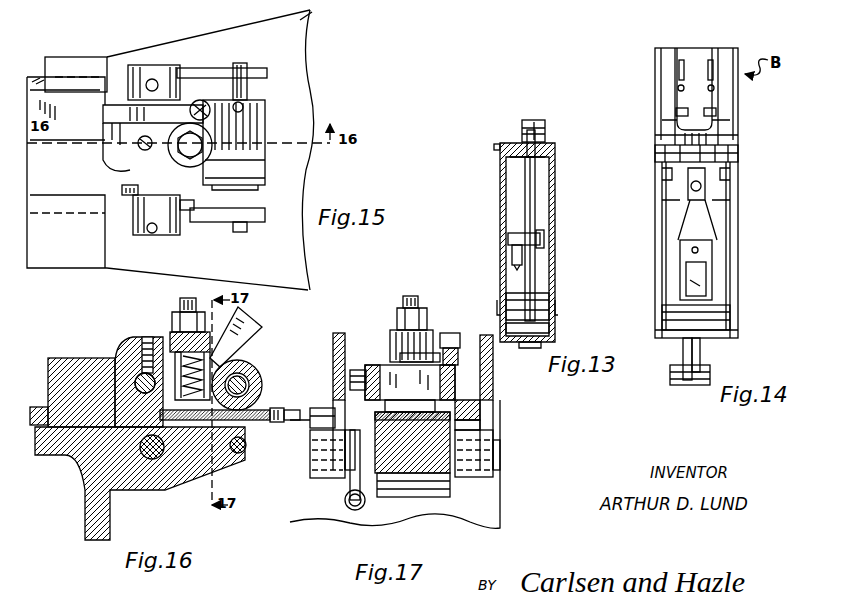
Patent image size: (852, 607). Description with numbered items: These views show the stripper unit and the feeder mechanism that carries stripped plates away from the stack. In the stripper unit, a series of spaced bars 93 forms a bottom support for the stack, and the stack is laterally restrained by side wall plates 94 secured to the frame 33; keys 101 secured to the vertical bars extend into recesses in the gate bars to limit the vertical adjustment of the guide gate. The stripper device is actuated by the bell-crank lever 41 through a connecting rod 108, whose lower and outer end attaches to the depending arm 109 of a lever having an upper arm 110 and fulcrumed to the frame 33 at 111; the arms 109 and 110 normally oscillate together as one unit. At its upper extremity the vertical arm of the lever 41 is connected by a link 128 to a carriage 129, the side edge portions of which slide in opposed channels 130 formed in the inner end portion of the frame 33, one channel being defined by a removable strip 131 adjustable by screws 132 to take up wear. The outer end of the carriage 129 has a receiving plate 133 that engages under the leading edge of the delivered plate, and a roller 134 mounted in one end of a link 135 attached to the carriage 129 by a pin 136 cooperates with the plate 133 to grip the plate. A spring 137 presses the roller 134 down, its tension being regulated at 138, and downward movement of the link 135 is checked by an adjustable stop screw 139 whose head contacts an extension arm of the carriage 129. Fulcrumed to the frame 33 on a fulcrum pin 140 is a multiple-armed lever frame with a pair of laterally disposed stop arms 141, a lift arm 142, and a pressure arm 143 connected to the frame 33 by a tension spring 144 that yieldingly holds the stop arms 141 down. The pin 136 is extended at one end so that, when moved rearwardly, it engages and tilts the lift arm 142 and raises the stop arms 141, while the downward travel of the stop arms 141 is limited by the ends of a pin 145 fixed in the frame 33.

In FIG. 15, the frame 33 is at (298, 30).
In FIG. 14, the frame 33 is at (735, 235).
In FIG. 16, the frame 33 is at (88, 502).
In FIG. 17, the frame 33 is at (492, 501).
In FIG. 13, the bell-crank lever 41 is at (533, 282).
In FIG. 14, the spaced bars 93 is at (740, 155).
In FIG. 14, the side wall plates 94 is at (657, 58).
In FIG. 14, the keys 101 is at (712, 60).
In FIG. 13, the connecting rod 108 is at (514, 262).
In FIG. 14, the connecting rod 108 is at (682, 359).
In FIG. 14, the depending arm 109 is at (705, 357).
In FIG. 14, the upper arm 110 is at (715, 276).
In FIG. 14, the fulcrum 111 is at (735, 327).
In FIG. 13, the link 128 is at (546, 125).
In FIG. 15, the carriage 129 is at (36, 100).
In FIG. 13, the carriage 129 is at (529, 120).
In FIG. 16, the carriage 129 is at (78, 360).
In FIG. 17, the carriage 129 is at (462, 418).
In FIG. 15, the channels 130 is at (60, 80).
In FIG. 13, the channels 130 is at (553, 147).
In FIG. 16, the channels 130 is at (42, 412).
In FIG. 17, the channels 130 is at (470, 428).
In FIG. 15, the removable strip 131 is at (88, 222).
In FIG. 13, the removable strip 131 is at (510, 146).
In FIG. 17, the removable strip 131 is at (322, 410).
In FIG. 13, the screws 132 is at (497, 150).
In FIG. 16, the screws 132 is at (278, 424).
In FIG. 15, the receiving plate 133 is at (268, 107).
In FIG. 16, the receiving plate 133 is at (265, 412).
In FIG. 17, the receiving plate 133 is at (412, 454).
In FIG. 15, the roller 134 is at (250, 166).
In FIG. 16, the roller 134 is at (255, 370).
In FIG. 15, the link 135 is at (250, 186).
In FIG. 17, the link 135 is at (456, 391).
In FIG. 15, the pin 136 is at (132, 203).
In FIG. 16, the pin 136 is at (125, 358).
In FIG. 17, the pin 136 is at (357, 372).
In FIG. 16, the spring housing 137 is at (178, 345).
In FIG. 17, the spring housing 137 is at (405, 355).
In FIG. 15, the spring tension regulator 138 is at (185, 100).
In FIG. 16, the spring tension regulator 138 is at (182, 303).
In FIG. 17, the spring tension regulator 138 is at (418, 300).
In FIG. 15, the adjustable stop screw 139 is at (215, 85).
In FIG. 17, the adjustable stop screw 139 is at (450, 340).
In FIG. 15, the fulcrum pin 140 is at (147, 62).
In FIG. 16, the fulcrum pin 140 is at (152, 460).
In FIG. 17, the fulcrum pin 140 is at (497, 454).
In FIG. 15, the stop arms 141 is at (265, 68).
In FIG. 16, the stop arms 141 is at (243, 318).
In FIG. 17, the stop arms 141 is at (338, 334).
In FIG. 15, the lift arm 142 is at (128, 190).
In FIG. 17, the lift arm 142 is at (350, 470).
In FIG. 15, the pressure arm 143 is at (175, 215).
In FIG. 17, the pressure arm 143 is at (352, 478).
In FIG. 17, the tension spring 144 is at (346, 510).
In FIG. 15, the pin 145 is at (250, 88).
In FIG. 16, the pin 145 is at (240, 453).